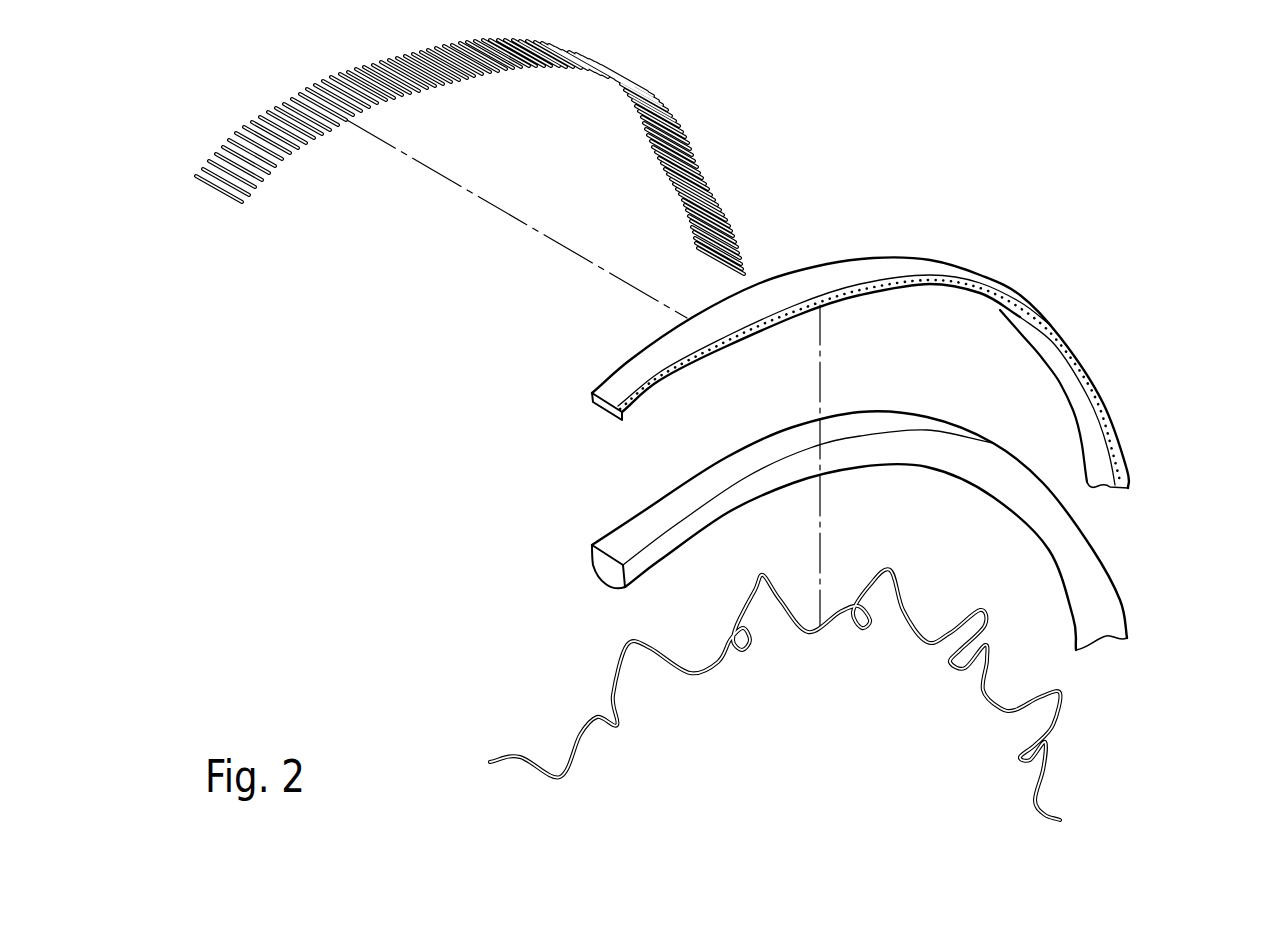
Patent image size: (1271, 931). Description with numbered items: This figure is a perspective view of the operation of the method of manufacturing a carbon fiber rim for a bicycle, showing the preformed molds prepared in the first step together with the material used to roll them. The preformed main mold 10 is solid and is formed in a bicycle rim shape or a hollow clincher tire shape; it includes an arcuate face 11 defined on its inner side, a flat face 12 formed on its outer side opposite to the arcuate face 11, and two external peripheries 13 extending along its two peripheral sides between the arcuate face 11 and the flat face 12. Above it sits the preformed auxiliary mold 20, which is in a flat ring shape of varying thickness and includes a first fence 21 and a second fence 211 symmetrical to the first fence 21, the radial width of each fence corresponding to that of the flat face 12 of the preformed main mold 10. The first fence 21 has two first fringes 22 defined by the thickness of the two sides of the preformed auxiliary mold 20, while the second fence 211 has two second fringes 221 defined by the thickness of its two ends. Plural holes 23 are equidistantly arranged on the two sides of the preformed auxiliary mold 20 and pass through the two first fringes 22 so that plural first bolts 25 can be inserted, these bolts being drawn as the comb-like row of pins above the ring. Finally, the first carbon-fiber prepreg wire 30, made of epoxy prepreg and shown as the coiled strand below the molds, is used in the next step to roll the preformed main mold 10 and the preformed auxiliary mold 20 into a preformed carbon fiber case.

The preformed main mold 10 is at (834, 544).
The arcuate face 11 is at (617, 592).
The flat face 12 is at (659, 508).
The external peripheries 13 is at (590, 547).
The preformed auxiliary mold 20 is at (829, 367).
The first fence 21 is at (799, 372).
The second fence 211 is at (634, 371).
The second fringes 221 is at (590, 394).
The first fringes 22 is at (1023, 307).
The holes 23 is at (863, 284).
The first bolts 25 is at (237, 142).
The first carbon-fiber prepreg wire 30 is at (855, 627).